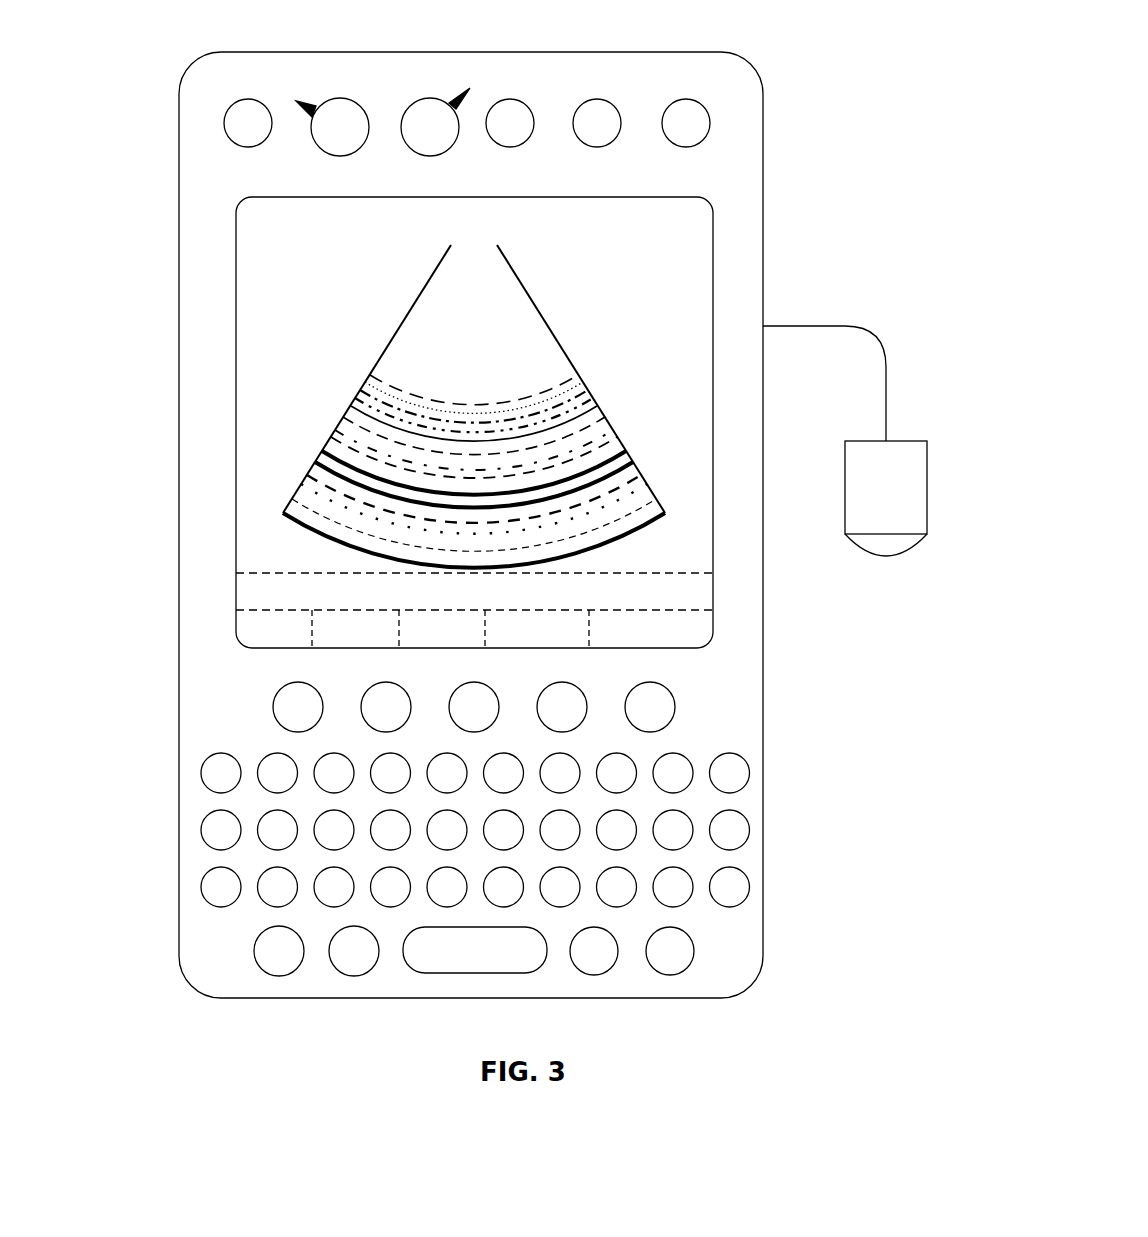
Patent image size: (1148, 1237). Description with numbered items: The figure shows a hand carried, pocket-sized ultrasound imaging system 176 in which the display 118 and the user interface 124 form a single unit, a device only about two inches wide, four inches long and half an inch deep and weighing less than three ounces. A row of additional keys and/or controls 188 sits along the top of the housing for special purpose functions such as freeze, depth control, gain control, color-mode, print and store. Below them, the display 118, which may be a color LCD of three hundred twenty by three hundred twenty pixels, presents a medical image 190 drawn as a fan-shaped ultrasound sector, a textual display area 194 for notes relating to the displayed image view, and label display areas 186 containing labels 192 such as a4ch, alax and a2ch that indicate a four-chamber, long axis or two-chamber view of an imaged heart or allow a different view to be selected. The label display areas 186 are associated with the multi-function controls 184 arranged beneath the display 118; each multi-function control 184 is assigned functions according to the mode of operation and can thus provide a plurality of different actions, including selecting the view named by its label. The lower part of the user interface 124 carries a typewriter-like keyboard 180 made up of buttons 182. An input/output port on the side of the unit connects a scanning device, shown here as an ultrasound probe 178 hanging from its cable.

The pocket-sized ultrasound imaging system 176 is at (194, 58).
The additional keys and/or controls 188 is at (248, 99).
The display 118 is at (713, 247).
The medical image 190 is at (368, 382).
The textual display area 194 is at (263, 572).
The label display areas 186 is at (263, 609).
The labels 192 is at (290, 612).
The multi-function controls 184 is at (300, 683).
The buttons 182 is at (475, 803).
The keyboard 180 is at (432, 838).
The user interface 124 is at (778, 603).
The ultrasound probe 178 is at (858, 441).